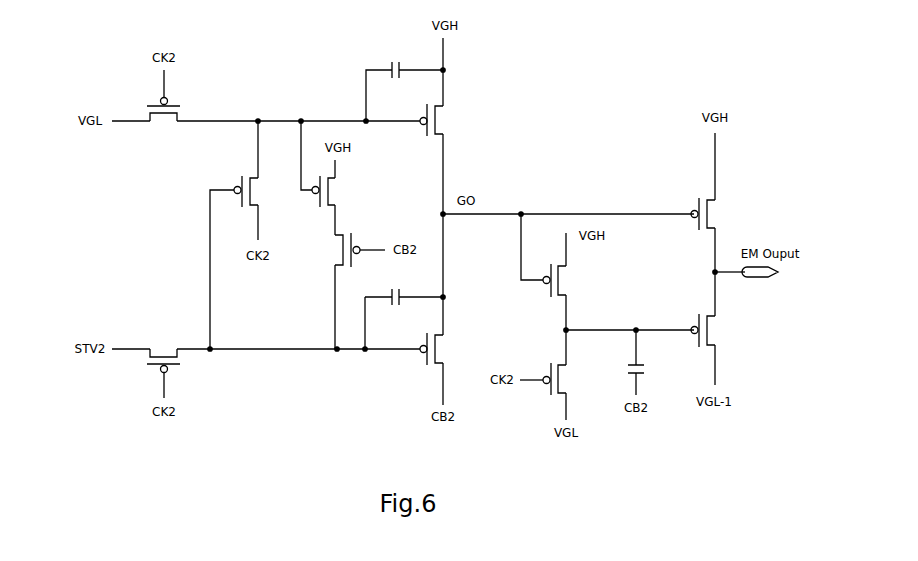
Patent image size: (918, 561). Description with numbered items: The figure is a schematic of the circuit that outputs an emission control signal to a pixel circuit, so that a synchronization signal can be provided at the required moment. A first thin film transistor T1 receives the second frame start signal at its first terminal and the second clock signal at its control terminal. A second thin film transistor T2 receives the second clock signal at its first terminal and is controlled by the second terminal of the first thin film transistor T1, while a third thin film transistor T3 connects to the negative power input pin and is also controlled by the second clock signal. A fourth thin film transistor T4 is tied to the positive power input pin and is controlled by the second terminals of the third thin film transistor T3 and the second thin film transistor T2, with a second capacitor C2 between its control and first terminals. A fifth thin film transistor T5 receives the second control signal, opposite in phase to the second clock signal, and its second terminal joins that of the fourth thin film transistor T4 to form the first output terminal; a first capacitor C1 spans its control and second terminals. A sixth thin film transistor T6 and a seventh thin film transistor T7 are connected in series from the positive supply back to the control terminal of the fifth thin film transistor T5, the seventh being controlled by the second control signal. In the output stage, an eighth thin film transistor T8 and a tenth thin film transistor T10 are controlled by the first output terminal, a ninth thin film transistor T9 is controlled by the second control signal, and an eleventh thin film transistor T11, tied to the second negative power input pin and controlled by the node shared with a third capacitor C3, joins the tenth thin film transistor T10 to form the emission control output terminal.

The first thin film transistor T1 is at (163, 354).
The second thin film transistor T2 is at (255, 191).
The third thin film transistor T3 is at (163, 117).
The fourth thin film transistor T4 is at (439, 120).
The fifth thin film transistor T5 is at (439, 349).
The sixth thin film transistor T6 is at (332, 191).
The seventh thin film transistor T7 is at (338, 250).
The eighth thin film transistor T8 is at (562, 280).
The ninth thin film transistor T9 is at (562, 379).
The tenth thin film transistor T10 is at (712, 214).
The eleventh thin film transistor T11 is at (712, 330).
The first capacitor C1 is at (384, 304).
The second capacitor C2 is at (417, 61).
The third capacitor C3 is at (627, 370).